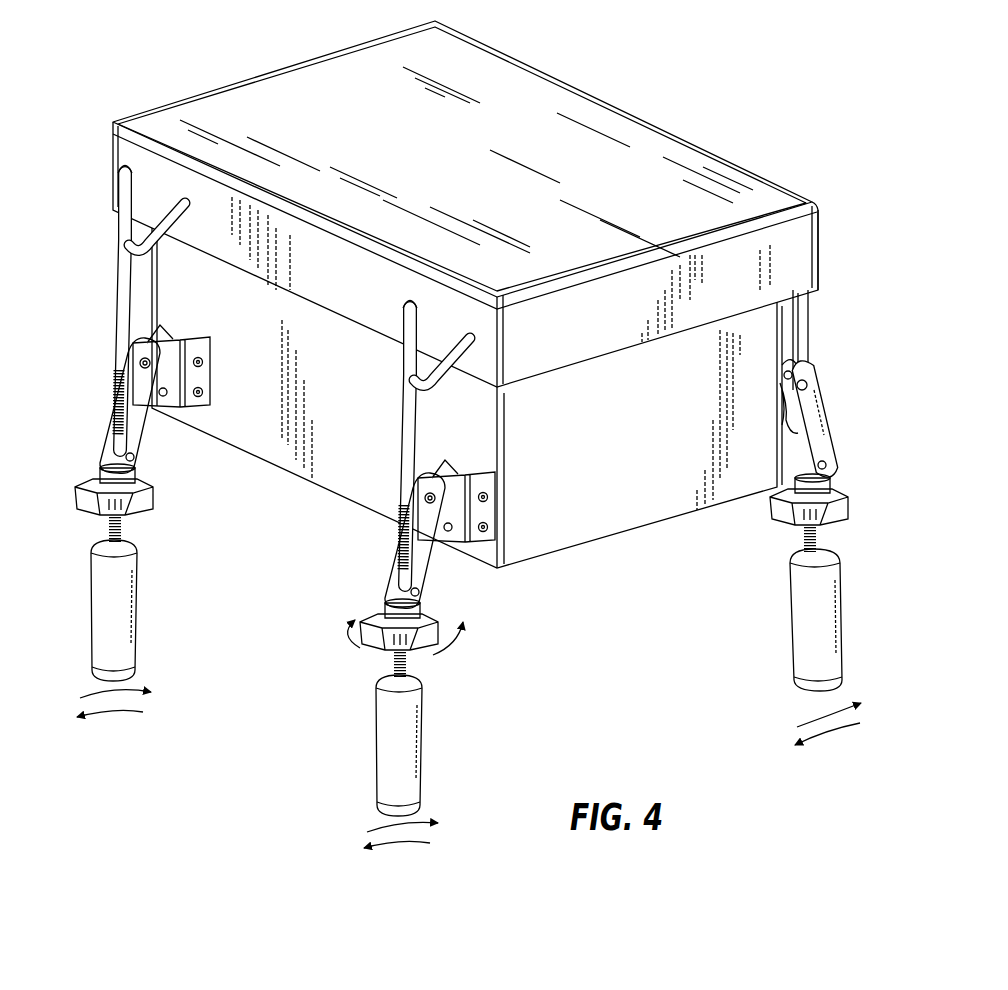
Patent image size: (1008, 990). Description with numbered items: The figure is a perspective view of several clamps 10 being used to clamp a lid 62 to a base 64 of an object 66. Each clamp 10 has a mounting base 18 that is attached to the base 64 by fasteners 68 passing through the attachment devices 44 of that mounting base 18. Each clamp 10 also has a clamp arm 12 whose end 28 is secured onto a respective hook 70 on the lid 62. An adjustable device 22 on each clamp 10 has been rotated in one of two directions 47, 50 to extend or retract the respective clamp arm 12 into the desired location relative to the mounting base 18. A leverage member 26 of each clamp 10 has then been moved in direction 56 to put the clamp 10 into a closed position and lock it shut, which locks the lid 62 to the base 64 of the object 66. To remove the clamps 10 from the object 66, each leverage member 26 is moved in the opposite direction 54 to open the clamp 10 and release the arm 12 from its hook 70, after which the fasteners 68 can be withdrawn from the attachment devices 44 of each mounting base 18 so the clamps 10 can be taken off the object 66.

The clamp 10 is at (468, 514).
The clamp arm 12 is at (459, 379).
The mounting base 18 is at (500, 415).
The adjustable device 22 is at (478, 536).
The leverage member 26 is at (466, 678).
The end 28 is at (265, 306).
The attachment device 44 is at (392, 435).
The direction 47 is at (327, 634).
The direction 50 is at (464, 650).
The direction 54 is at (469, 791).
The direction 56 is at (457, 749).
The lid 62 is at (814, 228).
The base 64 is at (655, 500).
The object 66 is at (640, 62).
The fastener 68 is at (341, 445).
The hook 70 is at (237, 254).